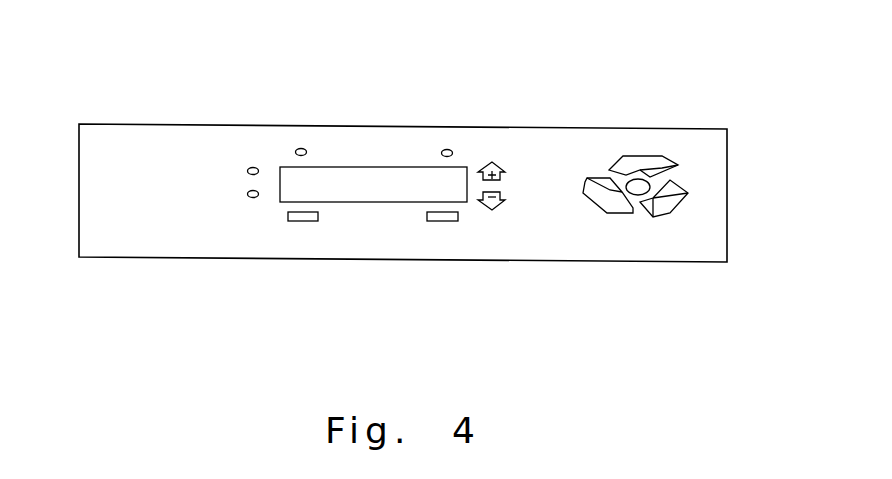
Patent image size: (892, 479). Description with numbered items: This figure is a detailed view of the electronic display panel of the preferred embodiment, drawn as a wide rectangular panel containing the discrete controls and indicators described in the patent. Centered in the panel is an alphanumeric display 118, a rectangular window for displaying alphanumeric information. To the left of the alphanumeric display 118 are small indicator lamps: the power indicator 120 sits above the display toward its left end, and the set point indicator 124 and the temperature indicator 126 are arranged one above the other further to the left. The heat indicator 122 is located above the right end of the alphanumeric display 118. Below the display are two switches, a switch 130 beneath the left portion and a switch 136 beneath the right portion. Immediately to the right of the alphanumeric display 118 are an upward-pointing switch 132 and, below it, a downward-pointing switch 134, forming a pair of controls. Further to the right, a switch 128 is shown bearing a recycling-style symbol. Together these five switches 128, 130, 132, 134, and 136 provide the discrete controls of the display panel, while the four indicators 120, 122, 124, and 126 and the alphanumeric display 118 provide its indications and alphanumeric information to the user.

The alphanumeric display 118 is at (372, 177).
The power indicator 120 is at (298, 148).
The heat indicator 122 is at (447, 149).
The set point indicator 124 is at (253, 167).
The temperature indicator 126 is at (253, 197).
The switch 128 is at (643, 175).
The switch 130 is at (302, 221).
The switch 132 is at (495, 162).
The switch 134 is at (496, 210).
The switch 136 is at (442, 221).